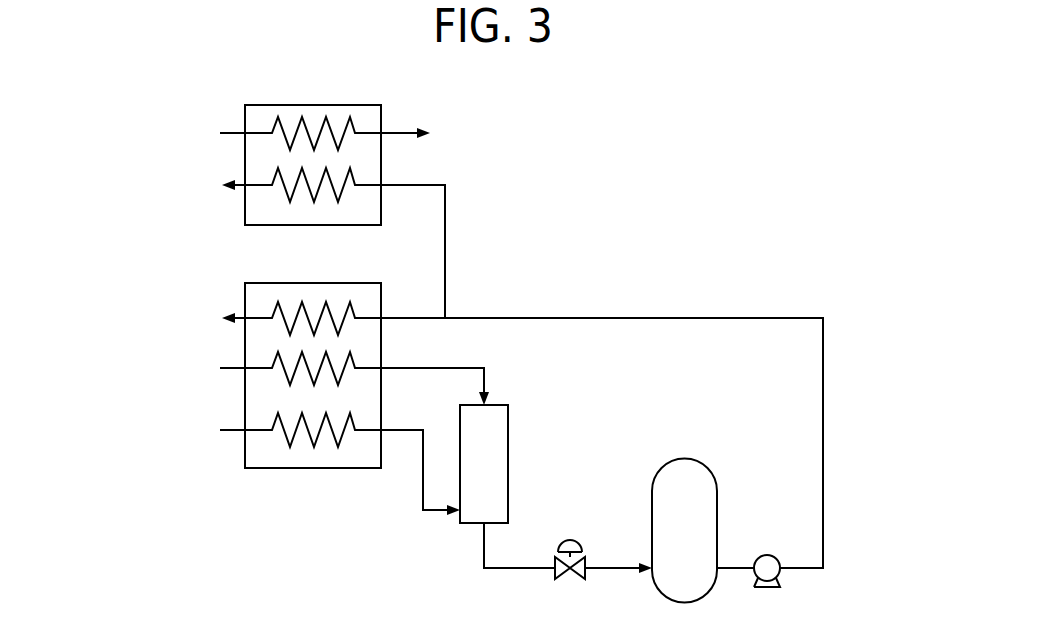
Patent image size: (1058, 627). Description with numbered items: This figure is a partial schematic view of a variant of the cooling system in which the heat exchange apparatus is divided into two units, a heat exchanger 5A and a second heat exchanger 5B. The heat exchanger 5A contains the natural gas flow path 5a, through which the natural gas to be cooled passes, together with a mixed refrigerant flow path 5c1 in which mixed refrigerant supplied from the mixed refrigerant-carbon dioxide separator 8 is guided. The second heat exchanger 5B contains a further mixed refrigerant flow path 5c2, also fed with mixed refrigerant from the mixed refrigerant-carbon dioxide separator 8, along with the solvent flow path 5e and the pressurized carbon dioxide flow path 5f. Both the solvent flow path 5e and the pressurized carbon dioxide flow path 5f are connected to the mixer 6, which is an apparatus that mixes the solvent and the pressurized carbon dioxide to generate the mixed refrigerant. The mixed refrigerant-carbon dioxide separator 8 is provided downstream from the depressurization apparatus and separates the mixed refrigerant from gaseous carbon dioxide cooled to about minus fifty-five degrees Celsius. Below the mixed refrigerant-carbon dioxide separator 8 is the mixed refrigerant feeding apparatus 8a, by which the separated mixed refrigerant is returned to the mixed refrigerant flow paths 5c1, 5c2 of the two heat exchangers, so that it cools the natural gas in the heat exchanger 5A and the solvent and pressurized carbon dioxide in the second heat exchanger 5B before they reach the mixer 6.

The heat exchanger 5A is at (280, 105).
The natural gas flow path 5a is at (327, 118).
The mixed refrigerant flow path 5c1 is at (352, 173).
The second heat exchanger 5B is at (257, 283).
The mixed refrigerant flow path 5c2 is at (353, 307).
The pressurized carbon dioxide flow path 5f is at (353, 358).
The solvent flow path 5e is at (353, 420).
The mixer 6 is at (508, 430).
The mixed refrigerant-carbon dioxide separator 8 is at (717, 503).
The mixed refrigerant feeding apparatus 8a is at (768, 555).